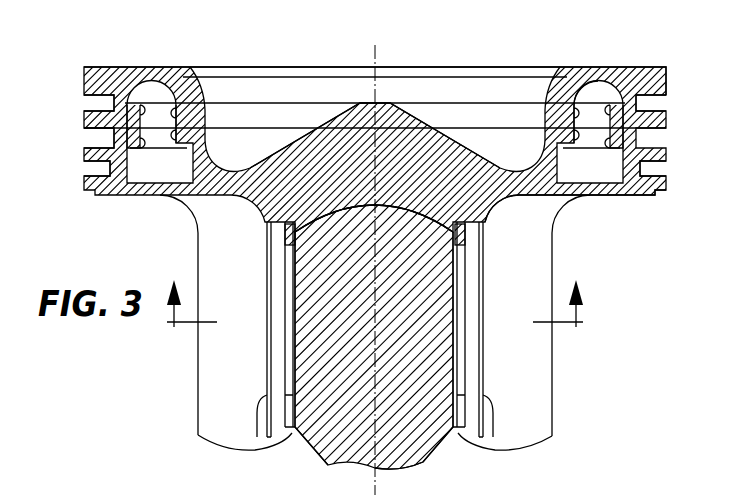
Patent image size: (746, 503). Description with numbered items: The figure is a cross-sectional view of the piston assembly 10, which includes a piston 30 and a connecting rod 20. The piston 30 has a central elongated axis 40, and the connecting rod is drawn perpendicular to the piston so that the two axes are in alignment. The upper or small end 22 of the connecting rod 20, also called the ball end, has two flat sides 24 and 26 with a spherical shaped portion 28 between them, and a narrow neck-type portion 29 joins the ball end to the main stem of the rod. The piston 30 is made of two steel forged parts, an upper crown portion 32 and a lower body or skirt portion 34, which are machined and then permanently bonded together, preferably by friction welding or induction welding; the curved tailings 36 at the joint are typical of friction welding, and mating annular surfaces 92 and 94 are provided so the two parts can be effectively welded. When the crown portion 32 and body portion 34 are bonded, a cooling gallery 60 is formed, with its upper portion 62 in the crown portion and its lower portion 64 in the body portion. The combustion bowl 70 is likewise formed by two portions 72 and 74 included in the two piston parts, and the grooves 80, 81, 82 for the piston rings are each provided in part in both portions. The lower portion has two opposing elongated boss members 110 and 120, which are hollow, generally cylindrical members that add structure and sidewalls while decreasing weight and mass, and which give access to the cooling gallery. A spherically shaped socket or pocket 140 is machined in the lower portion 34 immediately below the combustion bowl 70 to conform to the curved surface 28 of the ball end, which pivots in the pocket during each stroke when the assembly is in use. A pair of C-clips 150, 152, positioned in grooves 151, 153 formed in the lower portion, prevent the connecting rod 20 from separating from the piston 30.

The assembly 10 is at (106, 368).
The connecting rod 20 is at (320, 448).
The small end 22 is at (442, 288).
The flat side 24 is at (295, 308).
The flat side 26 is at (452, 357).
The spherical shaped portion 28 is at (403, 207).
The neck-type portion 29 is at (425, 457).
The piston 30 is at (550, 422).
The crown portion 32 is at (85, 74).
The body portion 34 is at (200, 387).
The curved tailings 36 is at (182, 122).
The central elongated axis 40 is at (383, 68).
The cooling gallery 60 is at (617, 177).
The upper portion of cooling gallery 62 is at (636, 66).
The lower portion of cooling gallery 64 is at (602, 168).
The combustion bowl 70 is at (450, 101).
The combustion bowl portion 72 is at (188, 108).
The combustion bowl portion 74 is at (281, 153).
The groove 80 is at (93, 108).
The groove 81 is at (97, 146).
The groove 82 is at (97, 175).
The mating annular surface 92 is at (580, 112).
The mating annular surface 94 is at (648, 103).
The boss member 110 is at (550, 387).
The boss member 120 is at (200, 433).
The socket 140 is at (310, 220).
The C-clip 150 is at (292, 360).
The groove 151 is at (283, 222).
The C-clip 152 is at (457, 412).
The groove 153 is at (468, 221).